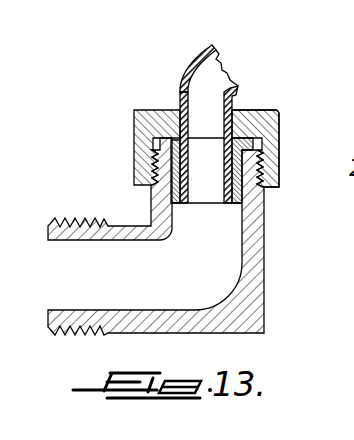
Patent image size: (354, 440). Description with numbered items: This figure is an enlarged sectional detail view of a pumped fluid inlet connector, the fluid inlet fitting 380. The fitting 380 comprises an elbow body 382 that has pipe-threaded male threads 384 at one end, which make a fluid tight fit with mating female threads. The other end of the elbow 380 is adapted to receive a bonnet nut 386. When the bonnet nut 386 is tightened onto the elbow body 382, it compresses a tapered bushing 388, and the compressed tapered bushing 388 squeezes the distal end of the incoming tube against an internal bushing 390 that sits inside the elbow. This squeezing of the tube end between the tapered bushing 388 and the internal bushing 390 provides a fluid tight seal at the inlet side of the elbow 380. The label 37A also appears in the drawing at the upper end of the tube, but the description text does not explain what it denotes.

The pipe-threaded male threads 384 is at (68, 219).
The elbow body 382 is at (230, 328).
The bonnet nut 386 is at (261, 111).
The tapered bushing 388 is at (150, 198).
The internal bushing 390 is at (187, 140).
The tube end 37A is at (210, 49).
The fluid inlet fitting 380 is at (294, 150).